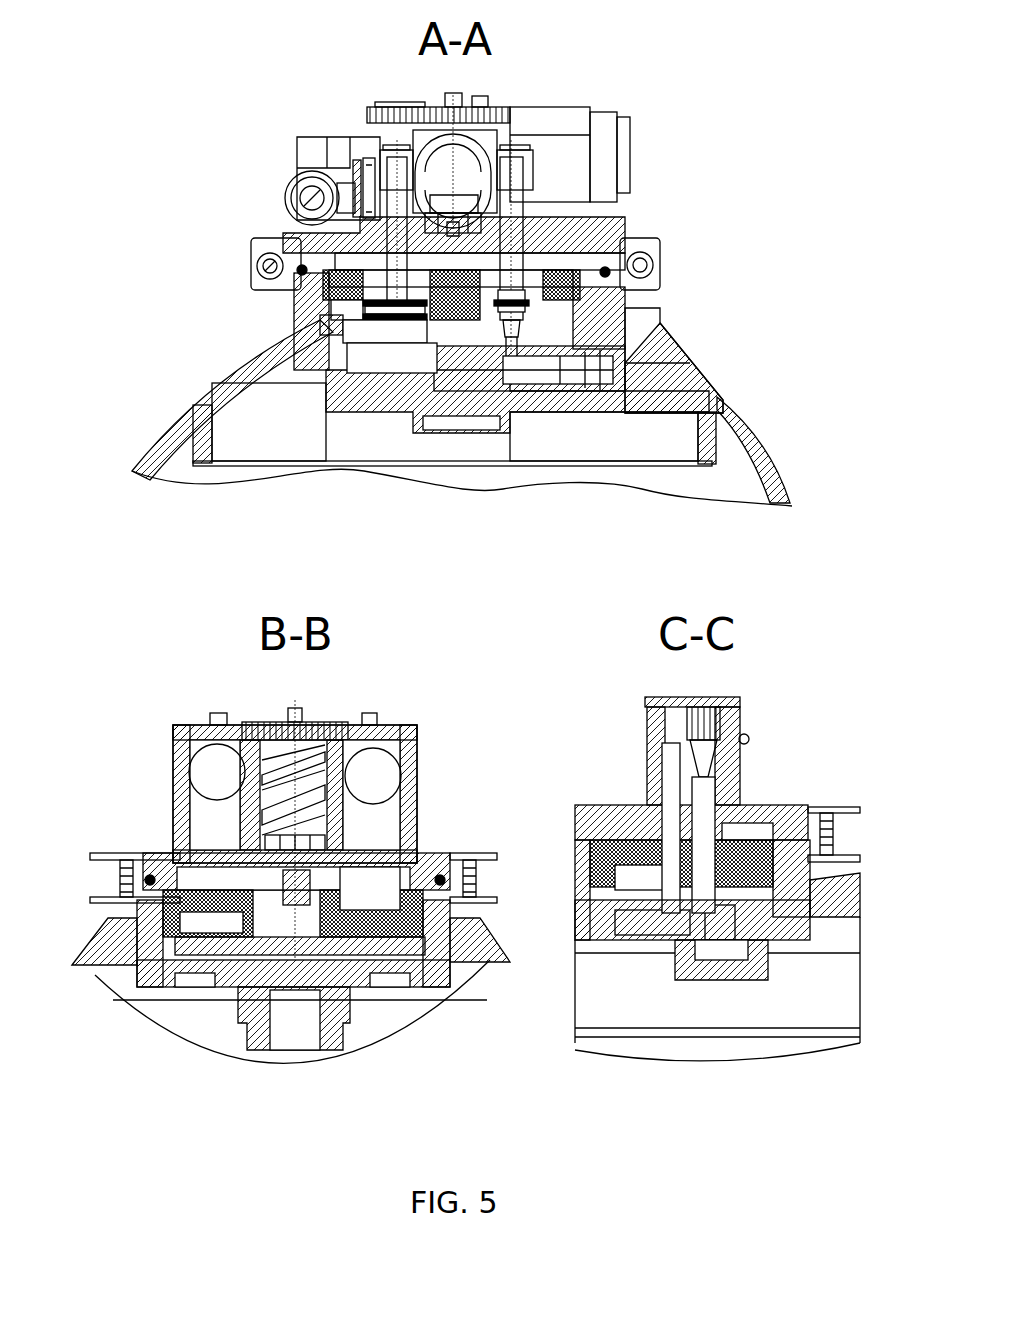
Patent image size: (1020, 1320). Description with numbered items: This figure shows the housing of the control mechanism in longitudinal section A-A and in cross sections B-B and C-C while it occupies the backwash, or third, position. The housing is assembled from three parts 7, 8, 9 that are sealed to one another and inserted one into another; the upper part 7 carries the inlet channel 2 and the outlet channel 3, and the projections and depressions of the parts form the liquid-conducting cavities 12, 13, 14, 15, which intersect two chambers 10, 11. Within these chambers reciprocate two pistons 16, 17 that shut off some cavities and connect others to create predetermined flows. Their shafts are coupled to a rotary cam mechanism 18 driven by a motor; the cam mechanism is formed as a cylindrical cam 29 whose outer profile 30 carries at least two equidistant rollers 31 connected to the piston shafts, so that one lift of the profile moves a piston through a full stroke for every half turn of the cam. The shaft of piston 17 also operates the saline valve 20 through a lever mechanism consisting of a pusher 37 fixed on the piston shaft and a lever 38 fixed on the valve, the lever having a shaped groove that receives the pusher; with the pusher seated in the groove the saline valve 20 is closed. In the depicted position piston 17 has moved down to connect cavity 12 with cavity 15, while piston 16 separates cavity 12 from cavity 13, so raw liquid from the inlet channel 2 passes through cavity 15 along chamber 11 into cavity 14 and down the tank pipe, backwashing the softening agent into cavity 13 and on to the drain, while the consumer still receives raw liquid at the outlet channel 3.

The inlet channel 2 is at (208, 765).
The outlet channel 3 is at (373, 776).
The upper part of the housing 7 is at (308, 245).
The housing part 8 is at (302, 270).
The housing part 9 is at (327, 323).
The chamber 10 is at (533, 293).
The chamber 11 is at (385, 330).
The liquid-conducting cavity 12 is at (560, 258).
The liquid-conducting cavity 13 is at (557, 320).
The liquid-conducting cavity 14 is at (393, 351).
The liquid-conducting cavity 15 is at (350, 309).
The piston 16 is at (493, 318).
The piston 17 is at (418, 312).
The cam mechanism 18 is at (450, 225).
The saline valve 20 is at (312, 198).
The cylindrical cam 29 is at (483, 185).
The outer profile 30 is at (470, 155).
The rollers 31 is at (405, 150).
The pusher 37 is at (370, 160).
The lever 38 is at (350, 177).